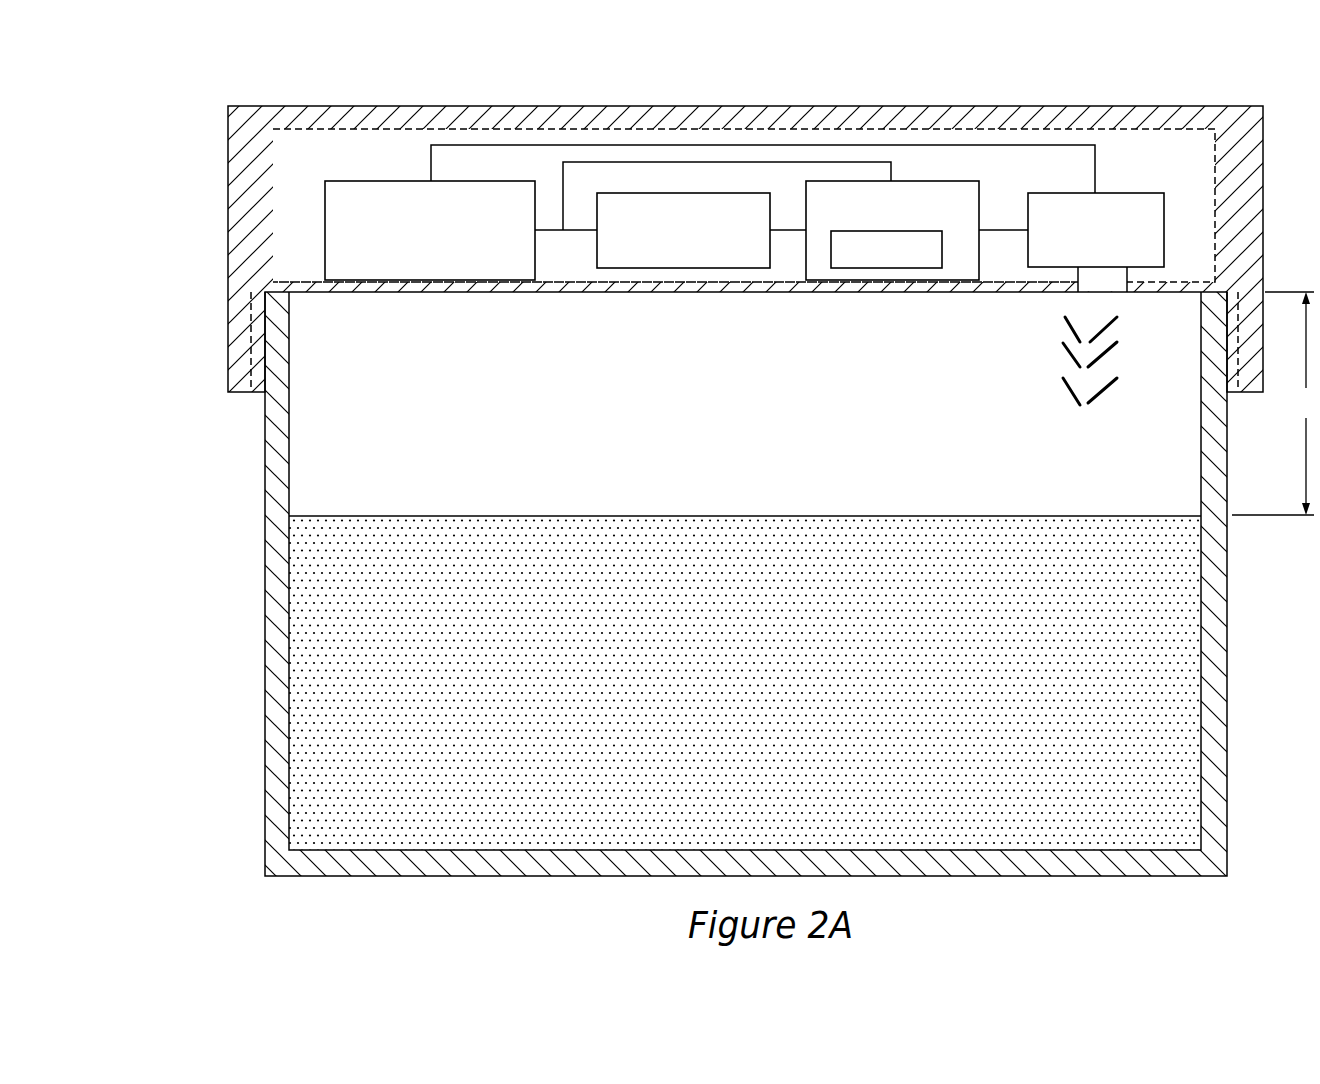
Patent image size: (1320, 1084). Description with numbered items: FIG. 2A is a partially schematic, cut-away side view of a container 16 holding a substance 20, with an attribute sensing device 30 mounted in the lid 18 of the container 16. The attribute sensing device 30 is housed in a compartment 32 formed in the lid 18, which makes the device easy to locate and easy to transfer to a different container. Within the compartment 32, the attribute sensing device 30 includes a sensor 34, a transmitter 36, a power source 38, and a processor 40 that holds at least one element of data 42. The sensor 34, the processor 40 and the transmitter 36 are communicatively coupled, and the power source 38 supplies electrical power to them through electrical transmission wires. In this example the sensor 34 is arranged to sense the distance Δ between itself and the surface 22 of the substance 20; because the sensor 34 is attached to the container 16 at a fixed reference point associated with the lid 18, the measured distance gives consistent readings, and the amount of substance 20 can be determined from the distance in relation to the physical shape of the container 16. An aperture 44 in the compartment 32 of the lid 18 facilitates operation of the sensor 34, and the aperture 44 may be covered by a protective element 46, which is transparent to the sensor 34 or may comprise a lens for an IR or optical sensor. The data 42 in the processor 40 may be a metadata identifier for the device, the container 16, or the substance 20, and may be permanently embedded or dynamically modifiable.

The container 16 is at (158, 560).
The lid 18 is at (227, 163).
The substance 20 is at (1041, 823).
The surface 22 is at (558, 516).
The attribute sensing device 30 is at (1160, 140).
The compartment 32 is at (1207, 213).
The sensor 34 is at (1115, 193).
The transmitter 36 is at (637, 193).
The power source 38 is at (387, 181).
The processor 40 is at (948, 181).
The data 42 is at (923, 268).
The aperture 44 is at (1110, 277).
The protective element 46 is at (1090, 290).